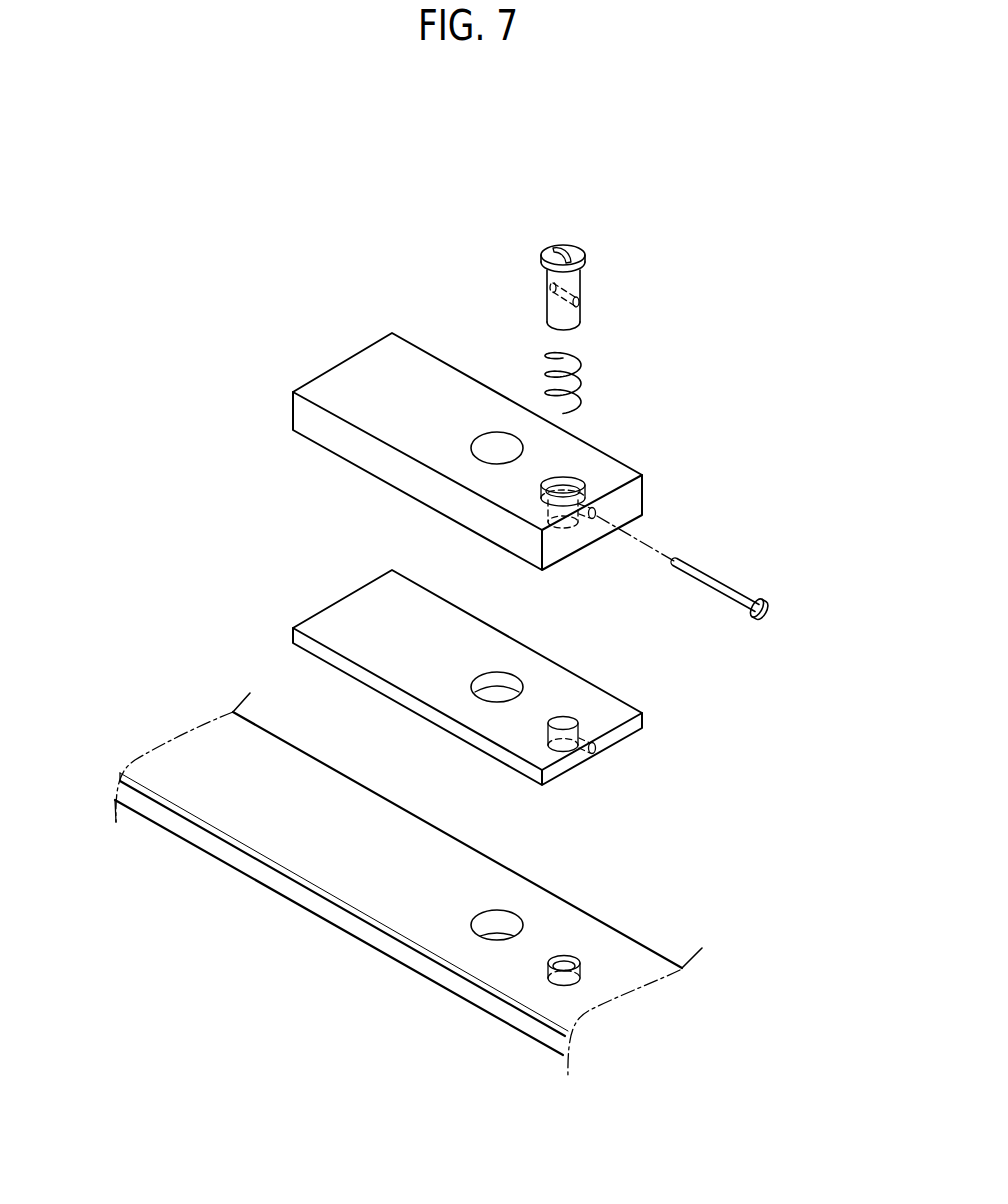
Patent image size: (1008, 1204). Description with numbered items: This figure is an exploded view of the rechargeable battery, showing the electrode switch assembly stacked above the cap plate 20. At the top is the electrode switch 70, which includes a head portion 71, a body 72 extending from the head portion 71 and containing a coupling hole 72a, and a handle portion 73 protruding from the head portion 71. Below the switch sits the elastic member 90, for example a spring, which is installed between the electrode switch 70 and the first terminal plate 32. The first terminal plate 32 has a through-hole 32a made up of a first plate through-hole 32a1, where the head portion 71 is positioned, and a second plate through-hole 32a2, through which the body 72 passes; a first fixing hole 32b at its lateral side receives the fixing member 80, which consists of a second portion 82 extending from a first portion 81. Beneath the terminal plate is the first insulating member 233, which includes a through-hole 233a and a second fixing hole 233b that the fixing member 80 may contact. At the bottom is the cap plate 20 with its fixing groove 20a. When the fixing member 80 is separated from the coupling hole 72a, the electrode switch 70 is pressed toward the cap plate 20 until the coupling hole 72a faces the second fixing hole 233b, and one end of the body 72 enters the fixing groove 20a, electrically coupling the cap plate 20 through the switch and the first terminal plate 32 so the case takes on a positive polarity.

The cap plate 20 is at (202, 755).
The fixing groove 20a is at (563, 968).
The first insulating member 233 is at (349, 617).
The through-hole 233a is at (570, 724).
The second fixing hole 233b is at (594, 751).
The first terminal plate 32 is at (360, 373).
The through-hole 32a is at (686, 473).
The first plate through-hole 32a1 is at (565, 488).
The second plate through-hole 32a2 is at (573, 522).
The first fixing hole 32b is at (597, 515).
The electrode switch 70 is at (595, 257).
The head portion 71 is at (583, 252).
The body 72 is at (573, 320).
The coupling hole 72a is at (579, 302).
The handle portion 73 is at (562, 247).
The fixing member 80 is at (713, 576).
The first portion 81 is at (766, 613).
The second portion 82 is at (695, 571).
The elastic member 90 is at (582, 390).